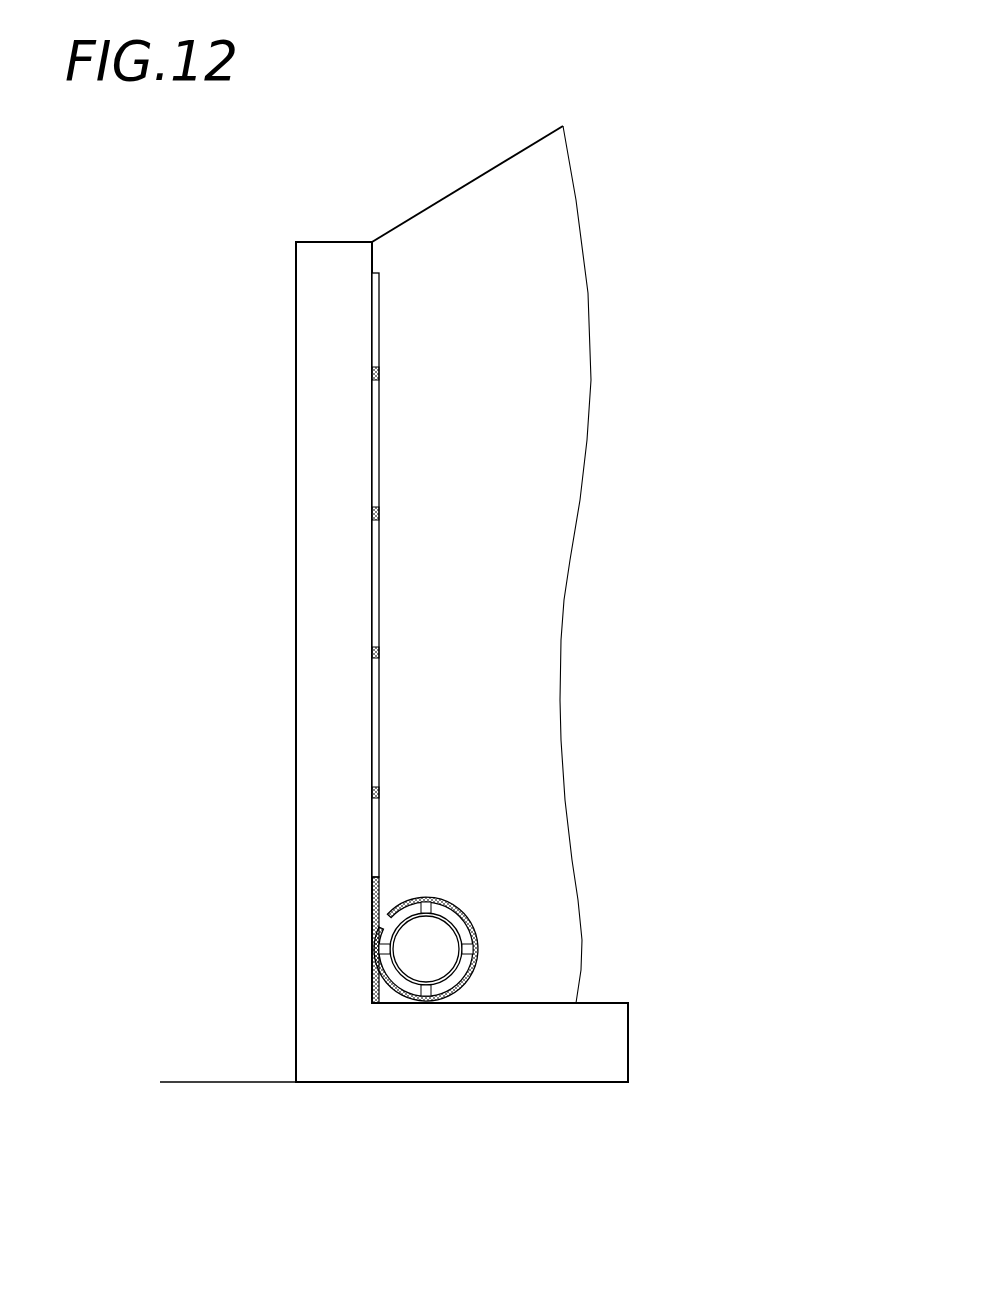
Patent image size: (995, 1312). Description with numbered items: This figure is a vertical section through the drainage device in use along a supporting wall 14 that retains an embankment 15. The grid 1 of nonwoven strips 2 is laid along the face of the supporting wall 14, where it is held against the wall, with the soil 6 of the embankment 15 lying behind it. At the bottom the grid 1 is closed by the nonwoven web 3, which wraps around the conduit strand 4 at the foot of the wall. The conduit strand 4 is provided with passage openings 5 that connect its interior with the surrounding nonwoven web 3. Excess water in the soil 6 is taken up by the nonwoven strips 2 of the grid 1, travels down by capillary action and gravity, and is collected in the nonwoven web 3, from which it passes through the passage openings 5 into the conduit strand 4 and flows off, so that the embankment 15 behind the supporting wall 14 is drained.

The grid 1 is at (386, 557).
The nonwoven strips 2 is at (376, 320).
The nonwoven web 3 is at (372, 887).
The conduit strand 4 is at (412, 957).
The passage openings 5 is at (480, 946).
The soil 6 is at (500, 318).
The supporting wall 14 is at (317, 635).
The embankment 15 is at (443, 197).